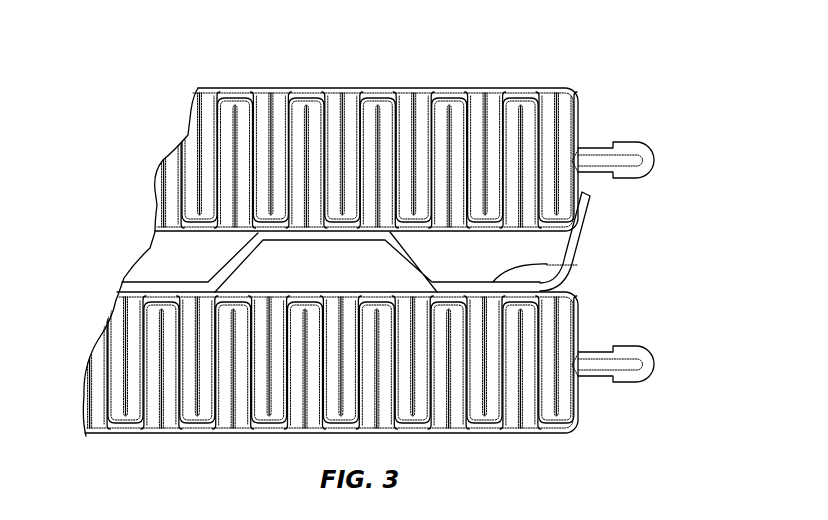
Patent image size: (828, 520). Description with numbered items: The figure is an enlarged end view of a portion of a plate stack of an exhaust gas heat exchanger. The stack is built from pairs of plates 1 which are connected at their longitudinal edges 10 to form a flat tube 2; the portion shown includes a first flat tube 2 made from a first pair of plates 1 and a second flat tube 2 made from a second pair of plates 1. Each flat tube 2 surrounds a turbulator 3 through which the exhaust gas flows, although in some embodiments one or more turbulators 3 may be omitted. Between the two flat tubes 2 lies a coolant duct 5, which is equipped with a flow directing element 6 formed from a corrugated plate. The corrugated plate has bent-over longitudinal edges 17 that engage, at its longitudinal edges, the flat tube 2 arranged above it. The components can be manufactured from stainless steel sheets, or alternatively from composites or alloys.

The plates 1 is at (318, 224).
The flat tube 2 is at (403, 78).
The turbulator 3 is at (540, 148).
The coolant duct 5 is at (178, 262).
The flow directing element 6 is at (578, 266).
The longitudinal edges 10 is at (598, 146).
The bent-over longitudinal edges 17 is at (577, 234).